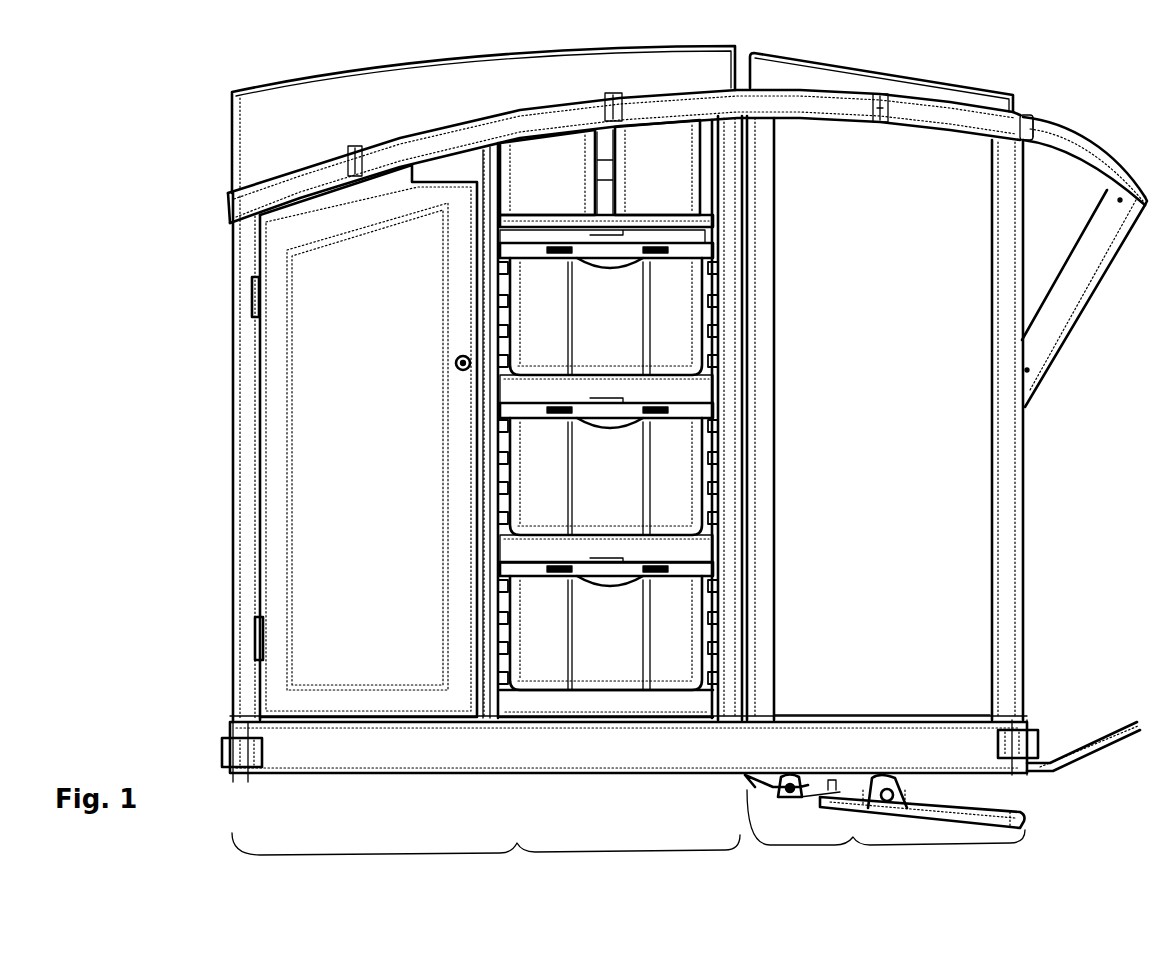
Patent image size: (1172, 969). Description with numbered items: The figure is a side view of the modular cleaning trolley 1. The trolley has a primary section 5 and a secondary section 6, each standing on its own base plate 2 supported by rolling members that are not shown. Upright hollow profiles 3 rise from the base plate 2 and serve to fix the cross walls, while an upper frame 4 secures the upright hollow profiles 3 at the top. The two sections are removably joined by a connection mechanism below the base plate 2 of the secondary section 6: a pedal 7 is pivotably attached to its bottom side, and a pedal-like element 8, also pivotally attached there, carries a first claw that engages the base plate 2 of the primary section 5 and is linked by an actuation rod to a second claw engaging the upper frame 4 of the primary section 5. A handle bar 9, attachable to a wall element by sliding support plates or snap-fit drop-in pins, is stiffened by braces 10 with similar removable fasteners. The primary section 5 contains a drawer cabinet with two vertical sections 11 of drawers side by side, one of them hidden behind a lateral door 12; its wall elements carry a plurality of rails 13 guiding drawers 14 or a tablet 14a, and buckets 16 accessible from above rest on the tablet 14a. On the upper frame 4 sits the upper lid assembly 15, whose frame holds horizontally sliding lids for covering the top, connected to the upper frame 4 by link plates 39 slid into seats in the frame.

The cleaning trolley 1 is at (636, 470).
The base plate 2 is at (630, 774).
The upright hollow profiles 3 is at (613, 474).
The upper frame 4 is at (612, 142).
The primary section 5 is at (486, 863).
The secondary section 6 is at (886, 838).
The pedal 7 is at (961, 801).
The pedal-like element 8 is at (792, 803).
The handle bar 9 is at (1085, 158).
The braces 10 is at (1083, 298).
The vertical sections of drawers 11 is at (606, 703).
The lateral door 12 is at (301, 441).
The rails 13 is at (600, 418).
The drawers 14 is at (606, 466).
The tablet 14a is at (682, 224).
The upper lid assembly 15 is at (580, 119).
The buckets 16 is at (600, 167).
The link plates 39 is at (618, 119).